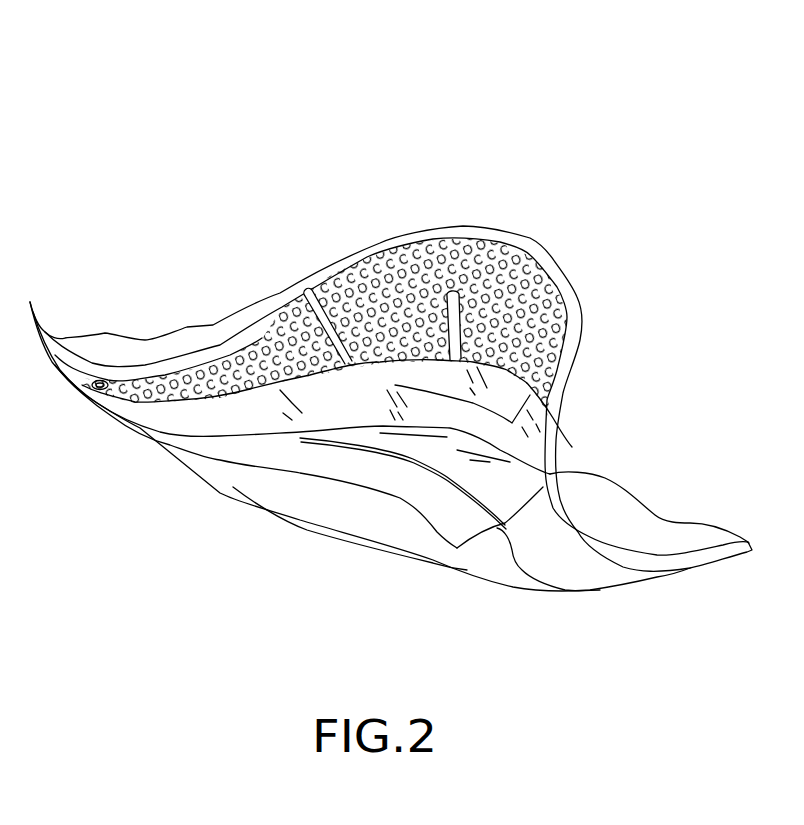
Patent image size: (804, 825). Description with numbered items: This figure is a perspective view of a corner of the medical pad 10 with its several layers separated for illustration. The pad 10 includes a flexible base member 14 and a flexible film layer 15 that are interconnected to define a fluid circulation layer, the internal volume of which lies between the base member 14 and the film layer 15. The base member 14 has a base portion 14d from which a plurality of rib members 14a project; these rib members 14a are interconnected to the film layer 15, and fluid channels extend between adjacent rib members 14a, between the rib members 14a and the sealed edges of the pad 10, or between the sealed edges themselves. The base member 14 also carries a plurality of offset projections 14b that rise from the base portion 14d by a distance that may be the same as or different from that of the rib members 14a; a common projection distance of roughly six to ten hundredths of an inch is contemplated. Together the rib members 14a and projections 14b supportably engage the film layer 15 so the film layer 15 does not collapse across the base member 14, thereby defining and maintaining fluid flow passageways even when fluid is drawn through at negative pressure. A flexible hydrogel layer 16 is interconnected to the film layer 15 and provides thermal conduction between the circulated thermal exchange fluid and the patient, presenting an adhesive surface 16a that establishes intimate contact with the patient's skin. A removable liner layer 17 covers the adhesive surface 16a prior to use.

The pad 10 is at (645, 88).
The flexible base member 14 is at (572, 318).
The rib members 14a is at (452, 327).
The offset projections 14b is at (268, 348).
The base portion 14d is at (477, 244).
The flexible film layer 15 is at (514, 393).
The flexible hydrogel layer 16 is at (413, 448).
The adhesive surface 16a is at (230, 448).
The removable liner layer 17 is at (467, 530).